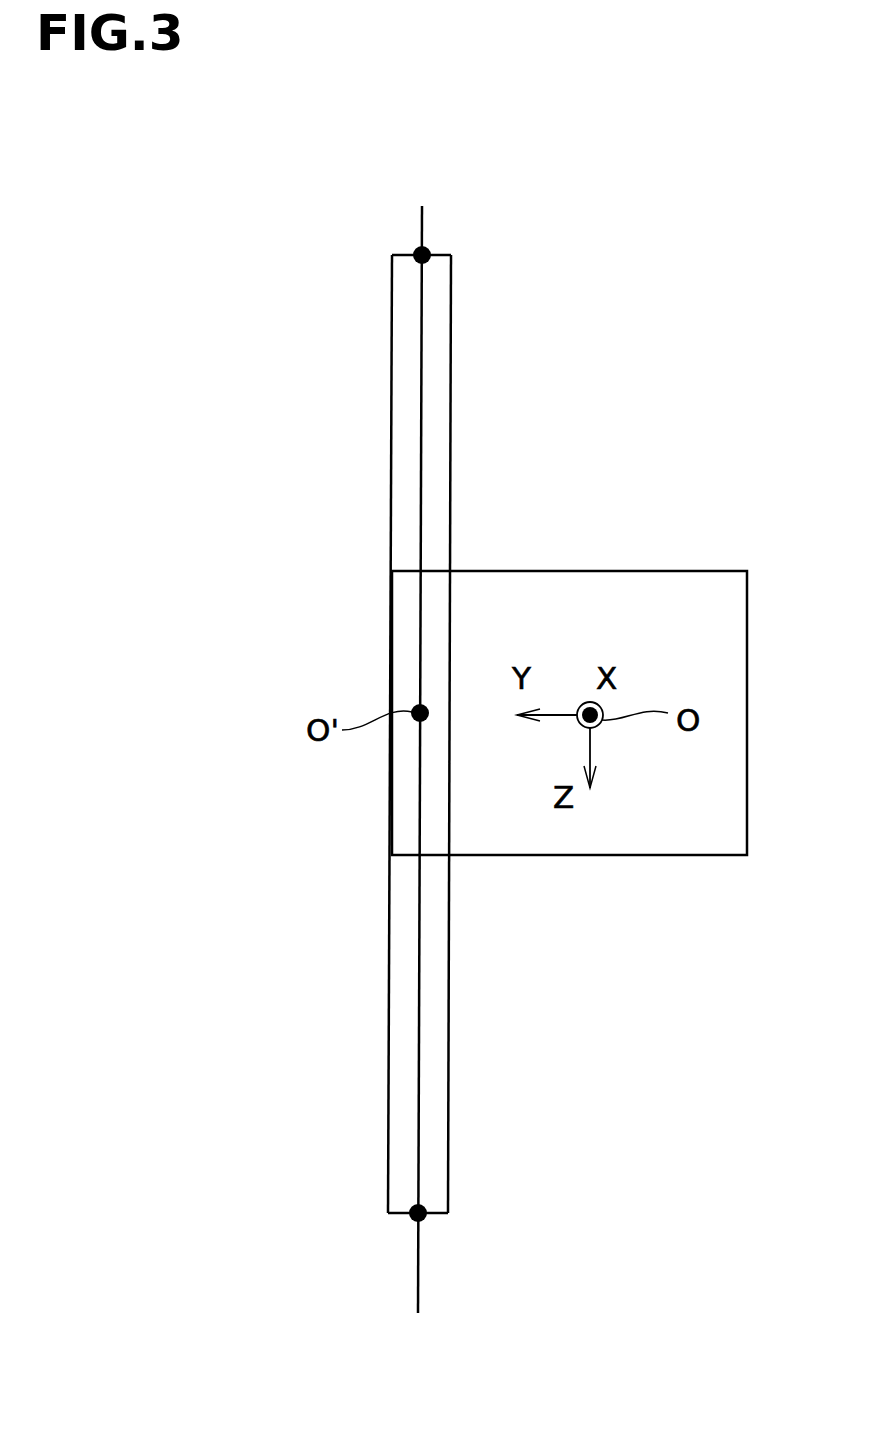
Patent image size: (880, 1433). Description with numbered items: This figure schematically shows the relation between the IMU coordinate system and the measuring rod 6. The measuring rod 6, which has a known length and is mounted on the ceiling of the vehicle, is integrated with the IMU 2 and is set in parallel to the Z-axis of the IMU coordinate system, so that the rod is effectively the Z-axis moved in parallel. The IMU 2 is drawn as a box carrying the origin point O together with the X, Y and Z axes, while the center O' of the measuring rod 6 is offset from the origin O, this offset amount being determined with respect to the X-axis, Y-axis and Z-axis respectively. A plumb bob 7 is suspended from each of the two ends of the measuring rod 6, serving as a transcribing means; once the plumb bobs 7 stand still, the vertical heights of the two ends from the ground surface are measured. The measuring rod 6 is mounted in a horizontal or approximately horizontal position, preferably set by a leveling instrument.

The IMU 2 is at (647, 571).
The measuring rod 6 is at (450, 445).
The plumb bob 7 is at (430, 250).